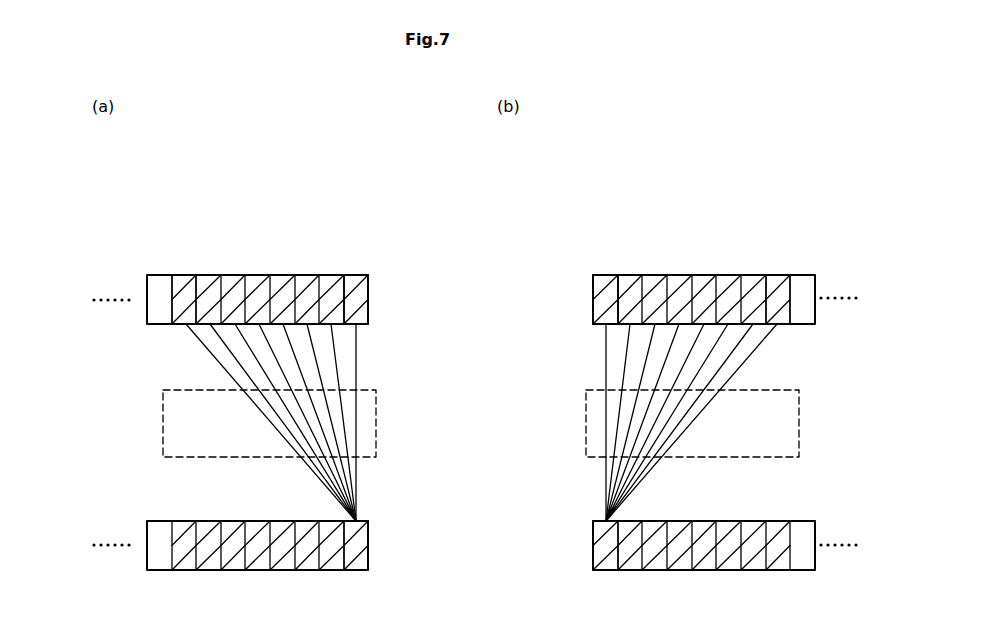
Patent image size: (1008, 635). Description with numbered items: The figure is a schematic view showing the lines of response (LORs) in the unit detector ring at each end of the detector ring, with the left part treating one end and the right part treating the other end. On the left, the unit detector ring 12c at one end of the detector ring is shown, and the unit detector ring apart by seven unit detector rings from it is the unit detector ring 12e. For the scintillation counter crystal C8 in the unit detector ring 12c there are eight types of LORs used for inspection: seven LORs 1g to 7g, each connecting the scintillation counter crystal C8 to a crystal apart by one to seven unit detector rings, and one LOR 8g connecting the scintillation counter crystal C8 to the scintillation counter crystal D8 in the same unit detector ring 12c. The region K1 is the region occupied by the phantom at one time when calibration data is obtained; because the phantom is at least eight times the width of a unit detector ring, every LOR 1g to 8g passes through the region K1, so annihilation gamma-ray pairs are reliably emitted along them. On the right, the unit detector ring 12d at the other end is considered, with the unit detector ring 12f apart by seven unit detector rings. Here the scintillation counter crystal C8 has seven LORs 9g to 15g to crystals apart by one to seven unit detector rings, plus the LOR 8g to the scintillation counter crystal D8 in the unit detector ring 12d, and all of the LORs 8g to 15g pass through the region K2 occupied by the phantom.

The unit detector ring 12e is at (198, 267).
The unit detector ring 12c is at (368, 205).
The unit detector ring 12d is at (618, 203).
The unit detector ring 12f is at (790, 268).
The scintillation counter crystal D8 is at (362, 275).
The scintillation counter crystal C8 is at (350, 572).
The LOR 1g is at (193, 332).
The LOR 7g is at (331, 343).
The LOR 8g is at (356, 363).
The LOR 9g is at (630, 337).
The LOR 15g is at (772, 333).
The region K1 is at (376, 413).
The region K2 is at (586, 412).